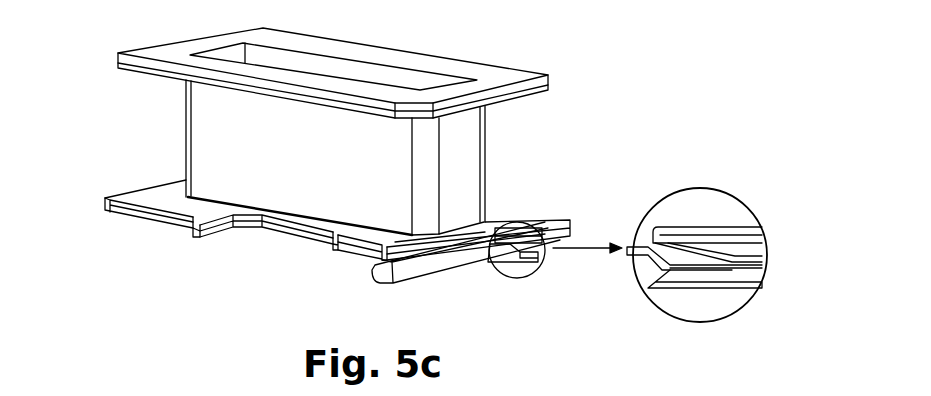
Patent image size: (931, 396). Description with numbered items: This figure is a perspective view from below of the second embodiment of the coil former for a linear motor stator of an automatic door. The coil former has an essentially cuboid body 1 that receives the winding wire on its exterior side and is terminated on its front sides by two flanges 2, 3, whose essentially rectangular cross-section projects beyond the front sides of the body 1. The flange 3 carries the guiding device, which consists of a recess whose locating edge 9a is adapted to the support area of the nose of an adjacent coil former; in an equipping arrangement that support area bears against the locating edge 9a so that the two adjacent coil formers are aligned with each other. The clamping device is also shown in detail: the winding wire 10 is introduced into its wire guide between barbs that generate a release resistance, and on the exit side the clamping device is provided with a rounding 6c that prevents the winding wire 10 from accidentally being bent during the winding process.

The body 1 is at (207, 133).
The flange 2 is at (347, 50).
The flange 3 is at (298, 259).
The locating edge 9a is at (285, 248).
The rounding 6c is at (665, 242).
The winding wire 10 is at (643, 252).